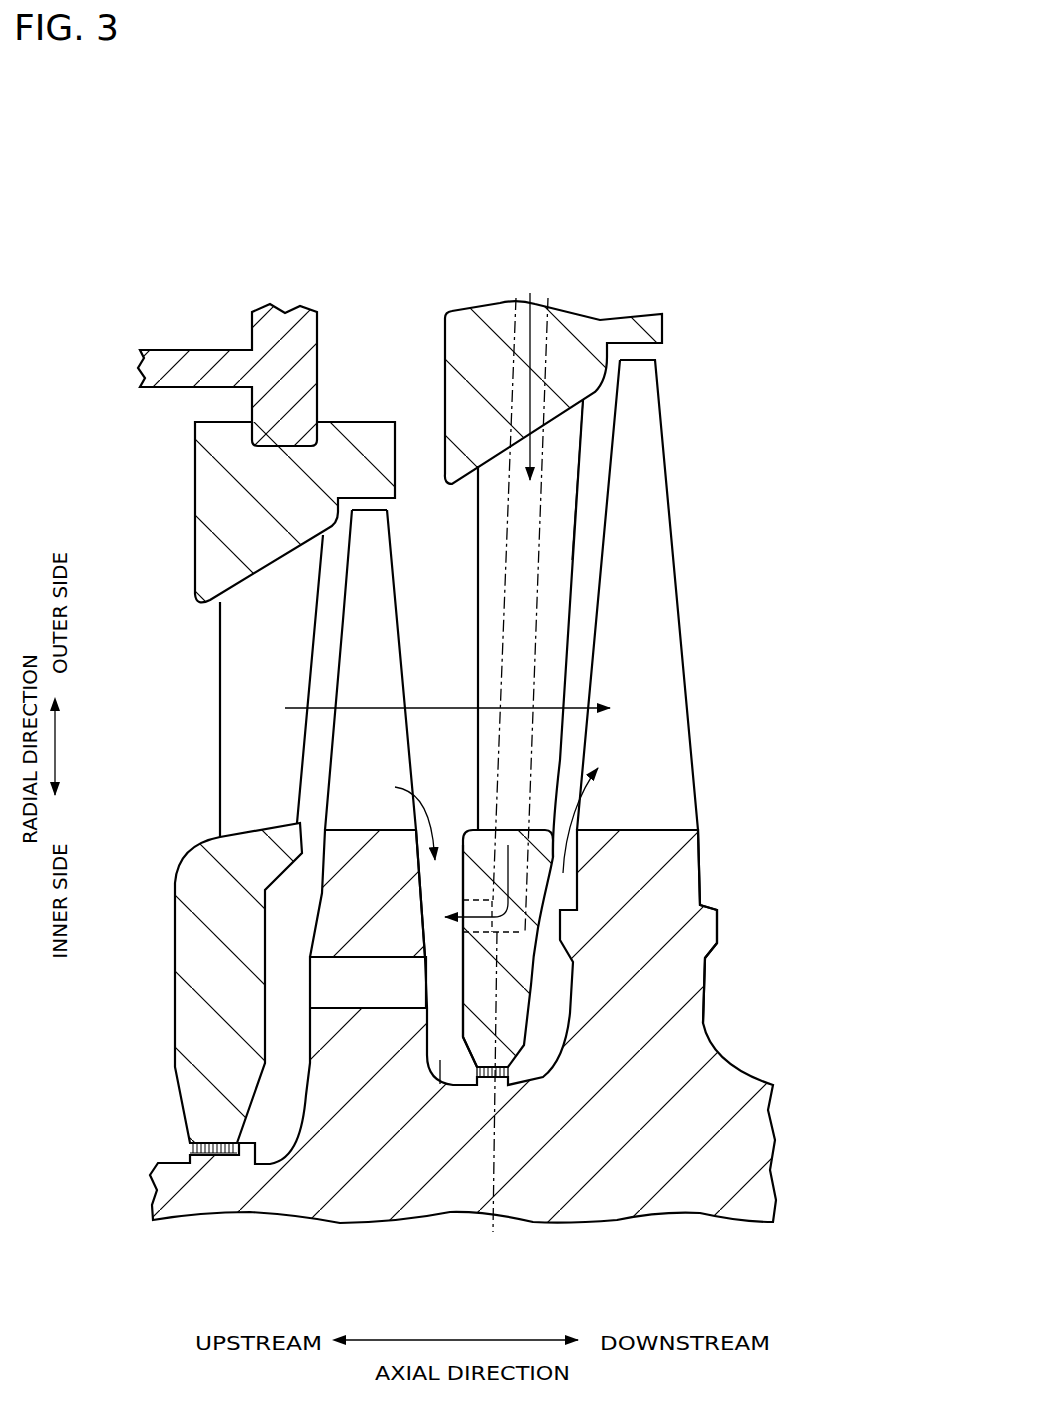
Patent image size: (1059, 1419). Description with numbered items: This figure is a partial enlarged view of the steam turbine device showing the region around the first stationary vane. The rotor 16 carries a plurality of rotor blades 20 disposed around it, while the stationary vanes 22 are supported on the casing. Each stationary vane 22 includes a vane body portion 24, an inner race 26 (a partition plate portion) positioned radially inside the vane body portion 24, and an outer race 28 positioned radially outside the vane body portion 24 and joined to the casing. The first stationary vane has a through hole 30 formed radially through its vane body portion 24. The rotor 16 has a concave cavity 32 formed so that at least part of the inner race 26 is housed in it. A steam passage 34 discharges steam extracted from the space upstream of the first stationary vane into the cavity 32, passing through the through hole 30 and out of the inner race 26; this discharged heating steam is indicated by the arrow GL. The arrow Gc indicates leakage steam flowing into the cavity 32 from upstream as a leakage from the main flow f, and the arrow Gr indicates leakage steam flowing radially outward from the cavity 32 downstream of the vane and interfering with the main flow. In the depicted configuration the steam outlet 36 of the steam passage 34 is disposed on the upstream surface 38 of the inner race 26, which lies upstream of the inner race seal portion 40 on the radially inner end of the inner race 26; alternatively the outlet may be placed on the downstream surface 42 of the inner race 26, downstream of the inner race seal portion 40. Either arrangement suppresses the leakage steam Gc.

The rotor 16 is at (730, 1067).
The rotor blades 20 is at (317, 764).
The stationary vanes 22 is at (220, 640).
The vane body portion 24 is at (573, 557).
The inner race 26 is at (175, 980).
The outer race 28 is at (195, 462).
The through hole 30 is at (560, 620).
The cavity 32 is at (443, 1085).
The steam passage 34 is at (547, 500).
The steam outlet 36 is at (460, 885).
The upstream surface 38 is at (440, 1058).
The inner race seal portion 40 is at (517, 1073).
The downstream surface 42 is at (703, 973).